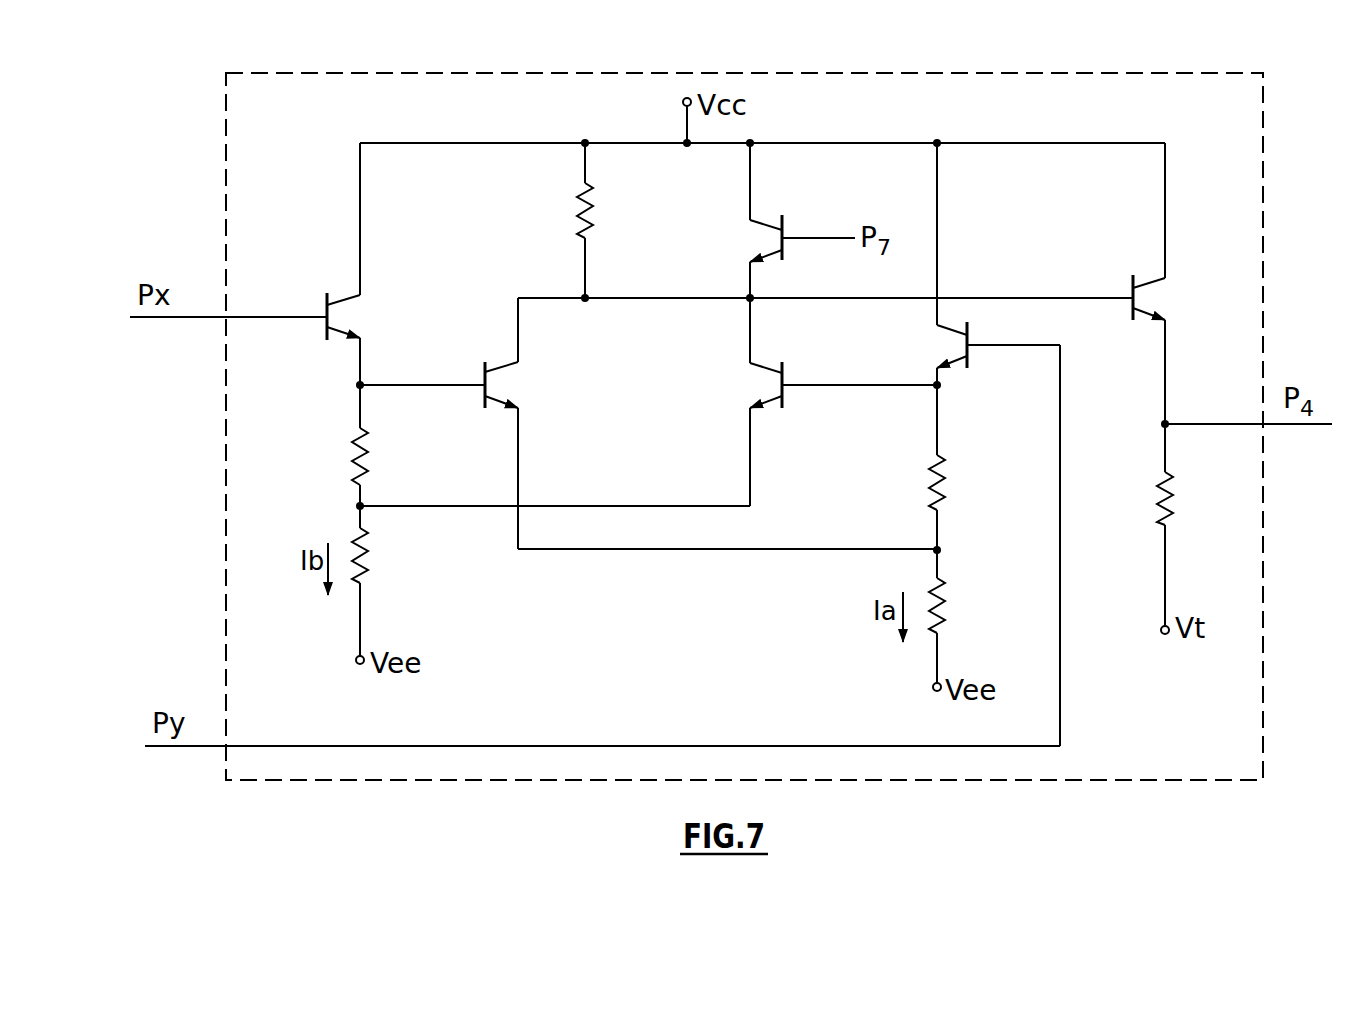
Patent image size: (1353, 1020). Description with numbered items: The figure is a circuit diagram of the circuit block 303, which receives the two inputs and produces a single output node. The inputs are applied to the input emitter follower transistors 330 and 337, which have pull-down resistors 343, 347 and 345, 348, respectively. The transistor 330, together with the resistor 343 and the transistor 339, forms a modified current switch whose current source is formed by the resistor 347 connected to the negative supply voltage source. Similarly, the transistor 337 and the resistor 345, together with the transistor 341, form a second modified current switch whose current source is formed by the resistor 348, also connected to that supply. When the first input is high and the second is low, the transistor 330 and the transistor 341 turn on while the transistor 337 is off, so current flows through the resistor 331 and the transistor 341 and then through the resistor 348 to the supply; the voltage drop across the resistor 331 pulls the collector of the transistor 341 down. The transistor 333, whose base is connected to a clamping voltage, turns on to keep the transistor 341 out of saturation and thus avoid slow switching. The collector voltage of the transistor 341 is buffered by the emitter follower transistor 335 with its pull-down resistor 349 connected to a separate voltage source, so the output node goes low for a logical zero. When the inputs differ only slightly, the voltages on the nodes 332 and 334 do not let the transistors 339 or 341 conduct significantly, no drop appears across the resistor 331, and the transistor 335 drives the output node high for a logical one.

The circuit block 303 is at (1266, 158).
The input emitter follower transistor 330 is at (350, 300).
The resistor 331 is at (597, 210).
The node 332 is at (362, 505).
The transistor 333 is at (767, 253).
The node 334 is at (940, 549).
The emitter follower transistor 335 is at (1147, 318).
The input emitter follower transistor 337 is at (948, 330).
The transistor 339 is at (770, 396).
The transistor 341 is at (508, 368).
The pull-down resistor 343 is at (368, 458).
The pull-down resistor 345 is at (945, 485).
The resistor 347 is at (368, 574).
The resistor 348 is at (945, 620).
The pull-down resistor 349 is at (1158, 505).